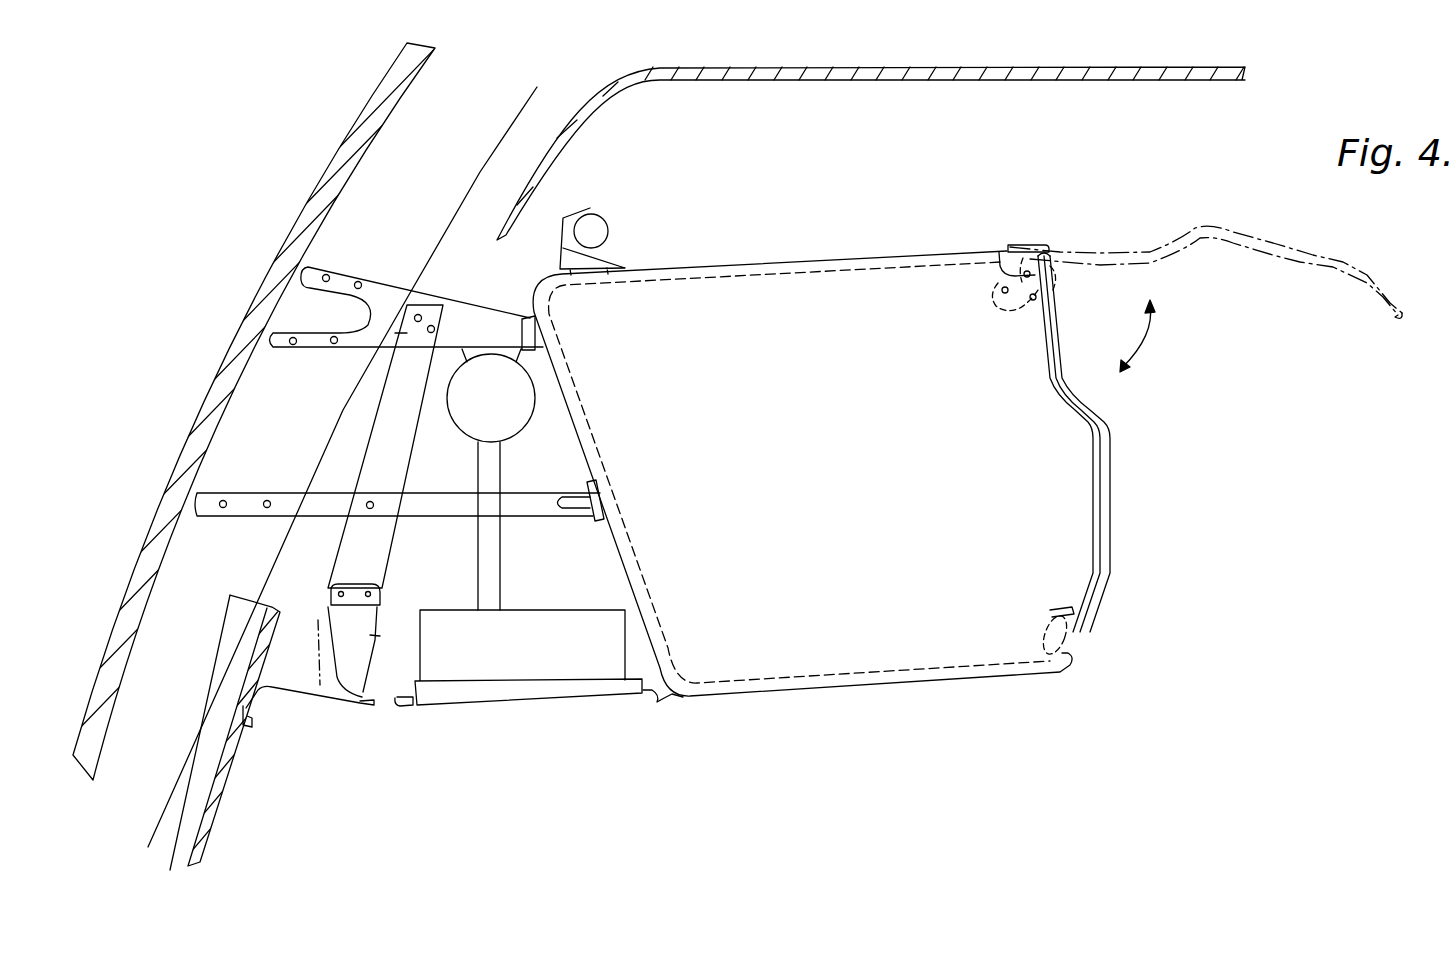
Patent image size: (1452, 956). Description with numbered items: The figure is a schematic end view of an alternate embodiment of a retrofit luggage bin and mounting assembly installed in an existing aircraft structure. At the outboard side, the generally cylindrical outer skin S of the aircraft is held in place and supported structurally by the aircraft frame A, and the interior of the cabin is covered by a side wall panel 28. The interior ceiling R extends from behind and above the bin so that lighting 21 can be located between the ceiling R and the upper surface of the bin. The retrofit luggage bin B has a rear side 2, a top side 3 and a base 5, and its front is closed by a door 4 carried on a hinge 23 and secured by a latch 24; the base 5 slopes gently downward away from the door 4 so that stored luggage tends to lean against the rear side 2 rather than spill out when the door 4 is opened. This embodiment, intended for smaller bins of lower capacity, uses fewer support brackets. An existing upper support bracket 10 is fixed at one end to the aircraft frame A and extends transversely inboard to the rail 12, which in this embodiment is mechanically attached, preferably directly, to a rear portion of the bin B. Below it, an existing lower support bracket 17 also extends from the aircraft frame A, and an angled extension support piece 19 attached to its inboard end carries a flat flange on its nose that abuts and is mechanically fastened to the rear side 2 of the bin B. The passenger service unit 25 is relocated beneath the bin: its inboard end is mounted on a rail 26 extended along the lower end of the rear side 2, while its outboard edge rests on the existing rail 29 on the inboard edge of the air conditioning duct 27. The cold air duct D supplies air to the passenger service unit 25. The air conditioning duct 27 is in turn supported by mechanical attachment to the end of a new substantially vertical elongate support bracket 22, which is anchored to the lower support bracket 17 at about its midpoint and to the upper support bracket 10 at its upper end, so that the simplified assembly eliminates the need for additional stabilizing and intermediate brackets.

The rear side 2 is at (655, 578).
The top side 3 is at (790, 265).
The door 4 is at (1302, 262).
The base 5 is at (870, 697).
The upper support bracket 10 is at (375, 282).
The rail 12 is at (540, 322).
The lower support bracket 17 is at (520, 510).
The angled extension support piece 19 is at (590, 517).
The lighting 21 is at (608, 218).
The vertical elongate support bracket 22 is at (388, 533).
The hinge 23 is at (1013, 300).
The latch 24 is at (1045, 626).
The passenger service unit 25 is at (523, 666).
The rail 26 is at (660, 705).
The air conditioning duct 27 is at (380, 617).
The side wall panel 28 is at (230, 753).
The rail 29 is at (397, 706).
The outer skin S is at (345, 162).
The aircraft frame A is at (255, 434).
The interior ceiling R is at (870, 80).
The retrofit luggage bin B is at (1035, 212).
The cold air duct D is at (491, 482).